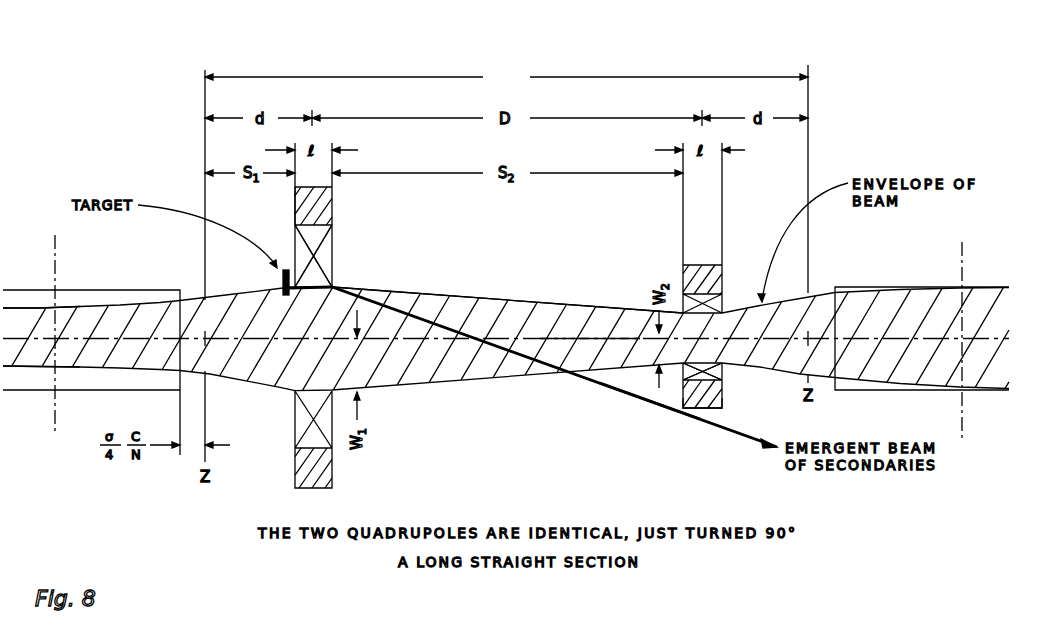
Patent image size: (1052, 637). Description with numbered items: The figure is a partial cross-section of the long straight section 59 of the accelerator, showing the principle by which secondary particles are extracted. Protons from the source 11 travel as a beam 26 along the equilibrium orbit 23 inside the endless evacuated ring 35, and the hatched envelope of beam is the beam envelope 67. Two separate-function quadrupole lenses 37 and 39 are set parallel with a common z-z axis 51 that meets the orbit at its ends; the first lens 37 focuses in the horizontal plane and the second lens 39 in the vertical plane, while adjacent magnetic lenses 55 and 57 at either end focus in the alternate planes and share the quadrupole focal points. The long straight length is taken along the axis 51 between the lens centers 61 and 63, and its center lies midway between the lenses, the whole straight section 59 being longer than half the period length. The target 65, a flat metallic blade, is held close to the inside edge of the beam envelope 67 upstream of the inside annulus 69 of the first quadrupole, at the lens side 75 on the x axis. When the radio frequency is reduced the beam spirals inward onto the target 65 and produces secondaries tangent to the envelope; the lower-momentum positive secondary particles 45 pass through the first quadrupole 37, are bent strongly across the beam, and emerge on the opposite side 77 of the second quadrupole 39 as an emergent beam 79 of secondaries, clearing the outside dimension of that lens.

The source 11 is at (43, 397).
The equilibrium orbit 23 is at (34, 342).
The beam 26 is at (40, 306).
The endless evacuated ring 35 is at (480, 428).
The quadrupole lens 37 is at (333, 213).
The quadrupole lens 39 is at (721, 265).
The positive secondary particles 45 is at (663, 405).
The z-z axis 51 is at (588, 337).
The magnetic lens 55 is at (122, 289).
The magnetic lens 57 is at (970, 287).
The long straight section 59 is at (573, 70).
The lens center 61 is at (314, 255).
The lens center 63 is at (712, 372).
The target 65 is at (284, 268).
The beam envelope 67 is at (392, 291).
The inside annulus 69 is at (338, 282).
The lens side 75 is at (295, 224).
The opposite side 77 is at (683, 407).
The beam 79 is at (718, 426).